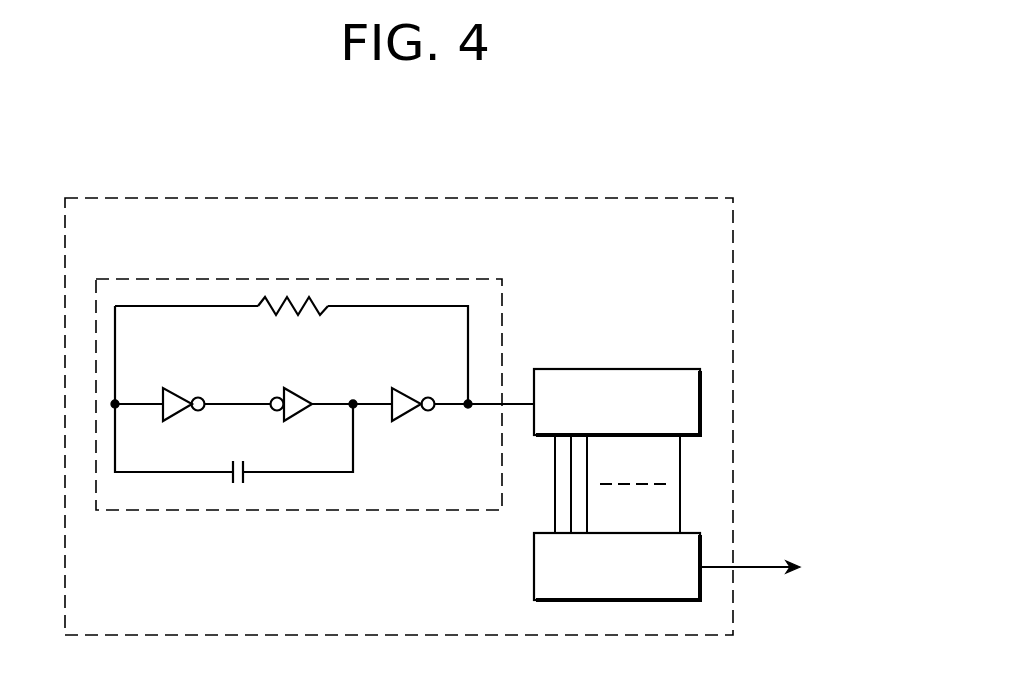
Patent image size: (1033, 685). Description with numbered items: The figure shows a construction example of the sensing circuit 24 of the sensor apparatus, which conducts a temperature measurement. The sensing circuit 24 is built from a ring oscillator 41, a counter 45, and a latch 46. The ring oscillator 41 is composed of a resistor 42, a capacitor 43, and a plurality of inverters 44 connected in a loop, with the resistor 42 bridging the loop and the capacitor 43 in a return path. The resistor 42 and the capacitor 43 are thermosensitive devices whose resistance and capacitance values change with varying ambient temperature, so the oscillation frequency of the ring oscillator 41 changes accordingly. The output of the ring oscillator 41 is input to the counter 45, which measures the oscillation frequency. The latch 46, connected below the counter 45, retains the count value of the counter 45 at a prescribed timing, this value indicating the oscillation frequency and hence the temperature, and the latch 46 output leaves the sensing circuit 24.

The sensing circuit 24 is at (676, 196).
The ring oscillator 41 is at (155, 278).
The resistor 42 is at (290, 298).
The capacitor 43 is at (232, 484).
The inverter 44 is at (181, 393).
The counter 45 is at (574, 369).
The latch 46 is at (534, 583).